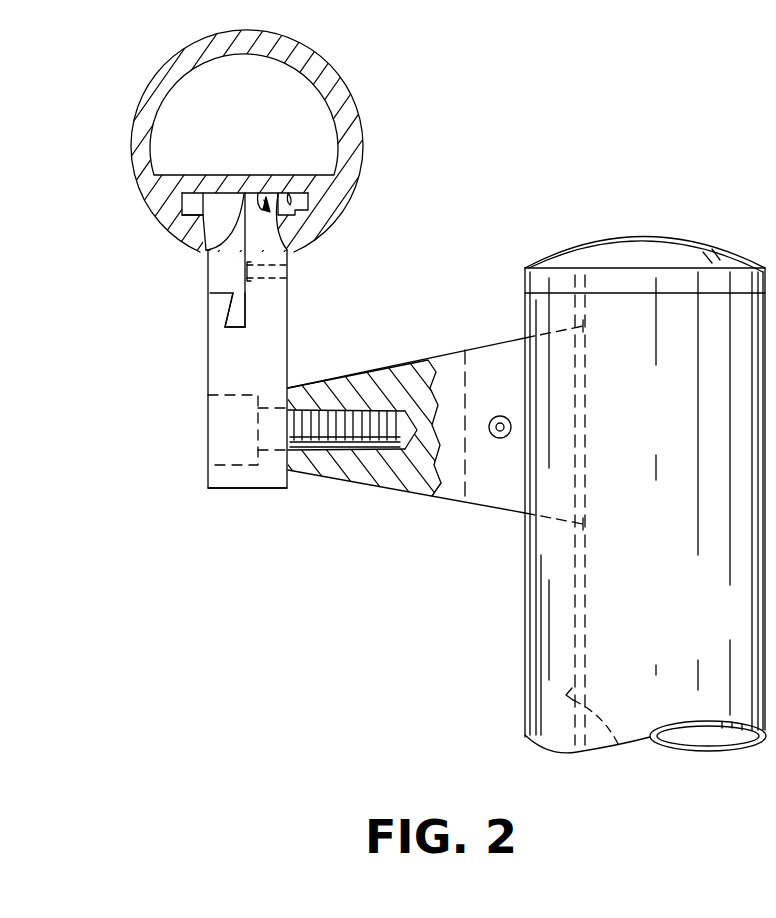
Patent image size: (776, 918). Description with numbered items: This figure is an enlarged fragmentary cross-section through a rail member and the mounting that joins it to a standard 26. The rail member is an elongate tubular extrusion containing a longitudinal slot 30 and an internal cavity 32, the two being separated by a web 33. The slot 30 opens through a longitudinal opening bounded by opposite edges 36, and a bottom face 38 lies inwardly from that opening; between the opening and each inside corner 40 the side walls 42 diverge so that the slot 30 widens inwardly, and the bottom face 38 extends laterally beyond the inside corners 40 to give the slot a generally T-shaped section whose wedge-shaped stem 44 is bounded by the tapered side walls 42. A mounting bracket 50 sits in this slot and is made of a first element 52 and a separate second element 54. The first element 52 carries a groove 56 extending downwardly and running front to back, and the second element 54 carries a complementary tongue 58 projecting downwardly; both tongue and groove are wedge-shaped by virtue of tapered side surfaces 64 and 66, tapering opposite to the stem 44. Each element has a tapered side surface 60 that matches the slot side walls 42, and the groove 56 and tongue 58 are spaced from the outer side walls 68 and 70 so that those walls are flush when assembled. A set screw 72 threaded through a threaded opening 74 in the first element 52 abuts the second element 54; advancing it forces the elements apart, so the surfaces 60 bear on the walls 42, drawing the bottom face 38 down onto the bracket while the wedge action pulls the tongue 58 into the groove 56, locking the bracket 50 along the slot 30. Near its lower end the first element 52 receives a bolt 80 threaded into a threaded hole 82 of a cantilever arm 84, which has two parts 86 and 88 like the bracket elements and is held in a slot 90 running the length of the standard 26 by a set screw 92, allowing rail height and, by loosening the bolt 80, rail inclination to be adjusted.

The standard 26 is at (660, 570).
The longitudinal slot 30 is at (253, 197).
The internal cavity 32 is at (232, 85).
The web 33 is at (172, 177).
The opposite edges 36 is at (246, 188).
The bottom face 38 is at (297, 200).
The inside corner 40 is at (212, 243).
The side walls 42 is at (183, 227).
The stem 44 is at (208, 250).
The mounting bracket 50 is at (208, 462).
The first element 52 is at (288, 367).
The second element 54 is at (188, 202).
The groove 56 is at (243, 300).
The tongue 58 is at (236, 328).
The tapered side surface 60 is at (203, 238).
The tapered side surface 64 is at (243, 312).
The tapered side surface 66 is at (210, 310).
The outer side wall 68 is at (208, 380).
The outer side wall 70 is at (208, 272).
The set screw 72 is at (287, 265).
The threaded opening 74 is at (287, 278).
The bolt 80 is at (328, 450).
The threaded hole 82 is at (404, 420).
The cantilever arm 84 is at (440, 497).
The part 86 is at (491, 497).
The part 88 is at (465, 382).
The slot 90 is at (621, 752).
The set screw 92 is at (500, 416).